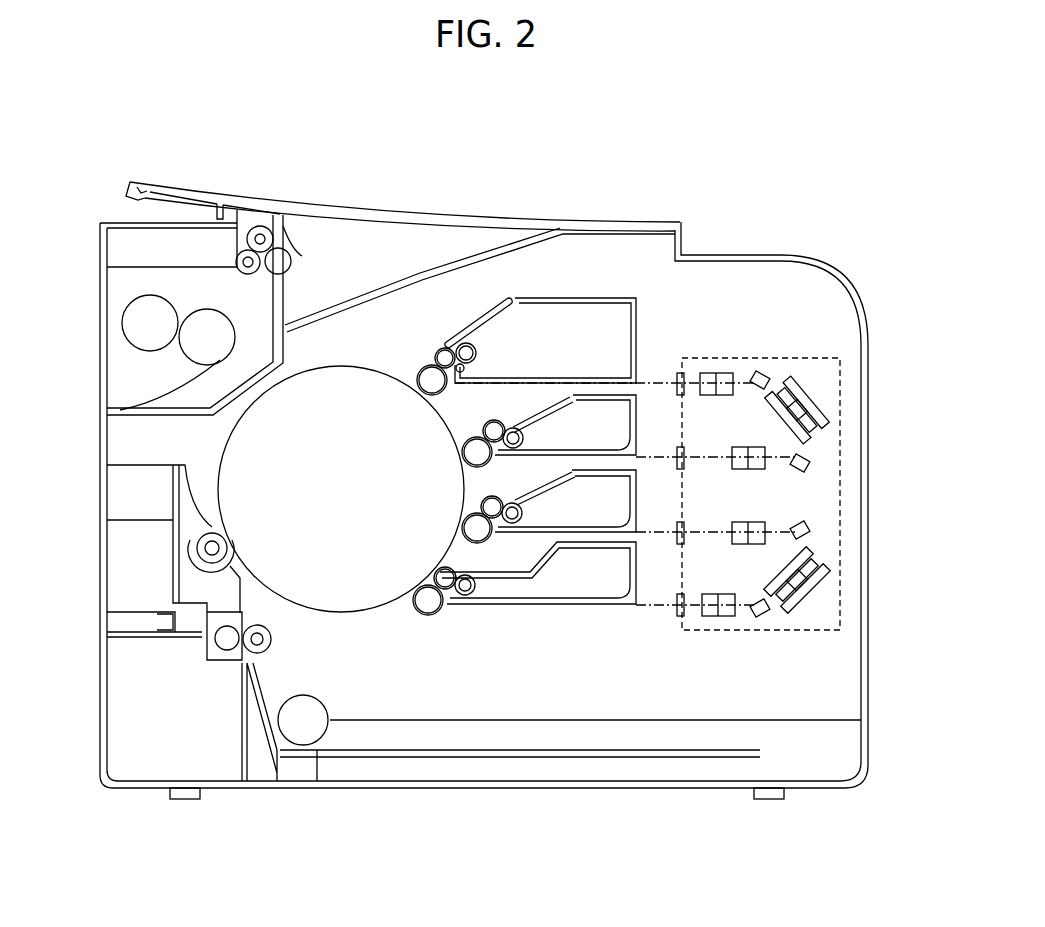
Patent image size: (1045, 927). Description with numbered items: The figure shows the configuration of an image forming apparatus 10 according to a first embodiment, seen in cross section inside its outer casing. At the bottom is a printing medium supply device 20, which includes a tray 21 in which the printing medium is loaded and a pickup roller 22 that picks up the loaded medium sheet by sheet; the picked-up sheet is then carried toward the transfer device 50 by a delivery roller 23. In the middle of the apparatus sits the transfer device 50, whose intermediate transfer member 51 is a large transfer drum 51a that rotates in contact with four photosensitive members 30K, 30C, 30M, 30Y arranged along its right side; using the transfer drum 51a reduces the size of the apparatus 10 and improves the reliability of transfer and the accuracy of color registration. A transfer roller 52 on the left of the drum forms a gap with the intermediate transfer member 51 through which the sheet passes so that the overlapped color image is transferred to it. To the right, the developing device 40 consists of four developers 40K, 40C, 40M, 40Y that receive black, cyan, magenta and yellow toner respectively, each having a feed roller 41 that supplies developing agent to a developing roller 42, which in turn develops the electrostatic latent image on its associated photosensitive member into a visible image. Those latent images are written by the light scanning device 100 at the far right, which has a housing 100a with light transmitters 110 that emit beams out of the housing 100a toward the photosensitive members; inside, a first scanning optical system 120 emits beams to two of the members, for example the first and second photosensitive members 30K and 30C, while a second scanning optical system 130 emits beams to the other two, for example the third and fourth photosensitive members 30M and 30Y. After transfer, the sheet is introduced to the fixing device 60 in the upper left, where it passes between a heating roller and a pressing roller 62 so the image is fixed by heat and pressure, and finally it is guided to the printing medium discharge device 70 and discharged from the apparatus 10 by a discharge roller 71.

The image forming apparatus 10 is at (692, 172).
The printing medium supply device 20 is at (498, 764).
The tray 21 is at (419, 760).
The pickup roller 22 is at (318, 770).
The delivery roller 23 is at (266, 650).
The first photosensitive member 30K is at (425, 364).
The second photosensitive member 30C is at (460, 443).
The third photosensitive member 30M is at (460, 538).
The fourth photosensitive member 30Y is at (419, 618).
The developing device 40 is at (597, 462).
The developer 40K is at (563, 297).
The developer 40C is at (641, 398).
The developer 40M is at (638, 480).
The developer 40Y is at (568, 606).
The feed roller 41 is at (477, 353).
The developing roller 42 is at (443, 347).
The transfer device 50 is at (318, 636).
The intermediate transfer member 51 is at (107, 413).
The transfer drum 51a is at (355, 358).
The transfer roller 52 is at (205, 548).
The fixing device 60 is at (137, 358).
The pressing roller 62 is at (122, 328).
The printing medium discharge device 70 is at (232, 276).
The discharge roller 71 is at (262, 225).
The light scanning device 100 is at (697, 437).
The housing 100a is at (827, 358).
The light transmitters 110 is at (674, 374).
The first scanning optical system 120 is at (828, 403).
The second scanning optical system 130 is at (826, 588).